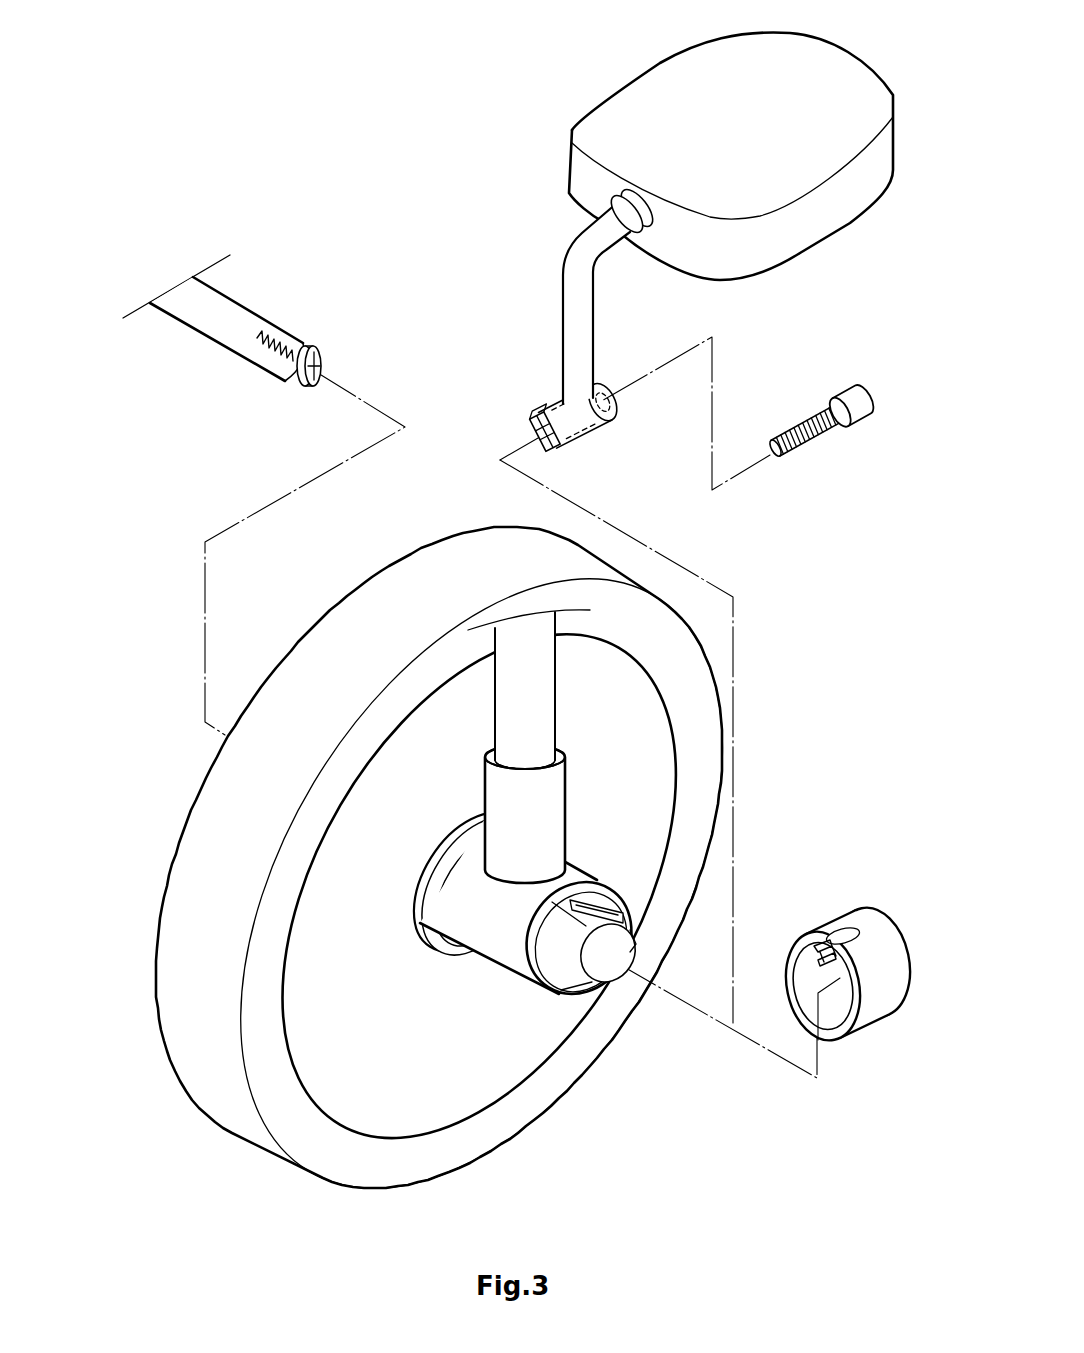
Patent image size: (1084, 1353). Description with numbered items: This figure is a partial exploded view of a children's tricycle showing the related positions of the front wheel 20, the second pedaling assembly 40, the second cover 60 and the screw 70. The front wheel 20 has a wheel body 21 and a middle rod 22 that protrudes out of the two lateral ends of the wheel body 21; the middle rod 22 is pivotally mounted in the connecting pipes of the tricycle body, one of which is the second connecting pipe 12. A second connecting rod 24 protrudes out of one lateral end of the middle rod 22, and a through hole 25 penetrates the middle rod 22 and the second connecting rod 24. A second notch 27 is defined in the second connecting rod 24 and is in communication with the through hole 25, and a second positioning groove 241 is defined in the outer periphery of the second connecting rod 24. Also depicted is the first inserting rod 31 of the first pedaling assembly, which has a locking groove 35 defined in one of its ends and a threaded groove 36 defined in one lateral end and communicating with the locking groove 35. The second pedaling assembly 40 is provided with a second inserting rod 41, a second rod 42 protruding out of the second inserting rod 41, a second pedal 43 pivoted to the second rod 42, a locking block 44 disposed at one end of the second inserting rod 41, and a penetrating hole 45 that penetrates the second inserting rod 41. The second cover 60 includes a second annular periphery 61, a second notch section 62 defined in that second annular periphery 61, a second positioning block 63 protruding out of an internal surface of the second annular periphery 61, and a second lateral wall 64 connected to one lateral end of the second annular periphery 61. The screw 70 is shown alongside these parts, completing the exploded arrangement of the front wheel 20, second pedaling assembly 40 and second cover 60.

The second connecting pipe 12 is at (564, 969).
The front wheel 20 is at (440, 849).
The wheel body 21 is at (300, 1128).
The middle rod 22 is at (444, 857).
The second connecting rod 24 is at (560, 962).
The second positioning groove 241 is at (633, 940).
The through hole 25 is at (605, 967).
The second notch 27 is at (590, 903).
The first inserting rod 31 is at (261, 282).
The locking groove 35 is at (305, 350).
The threaded groove 36 is at (273, 340).
The second pedaling assembly 40 is at (642, 268).
The second inserting rod 41 is at (575, 414).
The second rod 42 is at (568, 277).
The second pedal 43 is at (637, 85).
The locking block 44 is at (538, 413).
The penetrating hole 45 is at (593, 443).
The second cover 60 is at (860, 938).
The second annular periphery 61 is at (862, 978).
The second notch section 62 is at (845, 928).
The second positioning block 63 is at (813, 942).
The second lateral wall 64 is at (903, 957).
The screw 70 is at (817, 437).